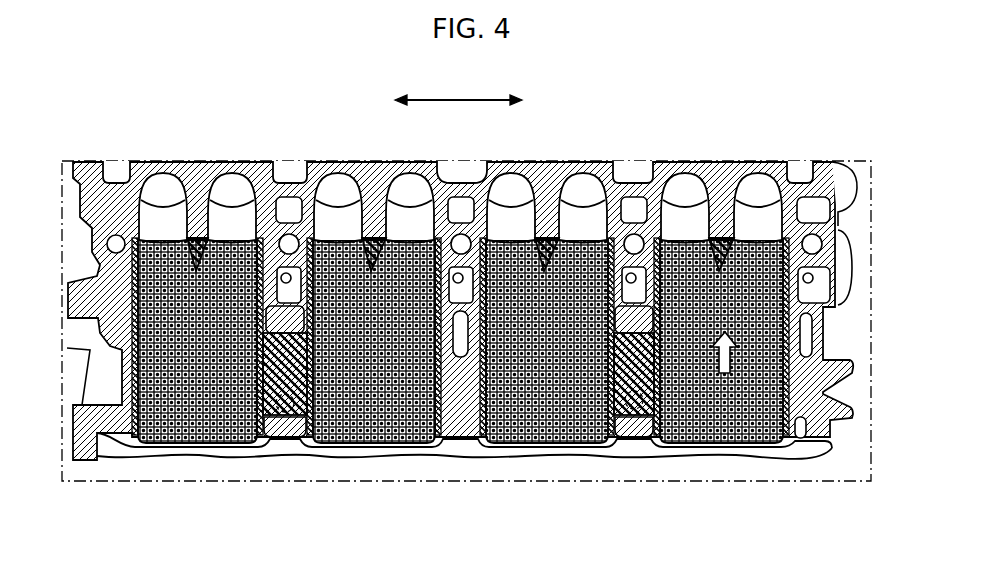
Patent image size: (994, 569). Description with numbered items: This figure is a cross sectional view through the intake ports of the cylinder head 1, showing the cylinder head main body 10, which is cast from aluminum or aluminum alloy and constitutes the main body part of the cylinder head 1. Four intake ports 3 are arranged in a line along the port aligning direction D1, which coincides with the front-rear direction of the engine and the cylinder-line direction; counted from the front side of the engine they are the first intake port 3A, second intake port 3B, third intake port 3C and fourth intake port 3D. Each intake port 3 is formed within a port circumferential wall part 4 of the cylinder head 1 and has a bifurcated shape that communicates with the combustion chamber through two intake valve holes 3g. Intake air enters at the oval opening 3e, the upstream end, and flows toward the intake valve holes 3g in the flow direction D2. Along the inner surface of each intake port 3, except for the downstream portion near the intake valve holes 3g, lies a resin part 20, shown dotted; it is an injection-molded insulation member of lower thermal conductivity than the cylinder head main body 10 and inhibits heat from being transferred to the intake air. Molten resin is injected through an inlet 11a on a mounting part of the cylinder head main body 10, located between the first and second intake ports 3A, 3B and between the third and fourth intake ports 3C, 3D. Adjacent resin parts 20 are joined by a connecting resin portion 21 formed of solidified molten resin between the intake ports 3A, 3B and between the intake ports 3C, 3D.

The cylinder head 1 is at (450, 302).
The cylinder head main body 10 is at (820, 158).
The intake port 3 is at (460, 386).
The first intake port 3A is at (174, 452).
The second intake port 3B is at (388, 452).
The third intake port 3C is at (547, 452).
The fourth intake port 3D is at (697, 452).
The opening of the intake port 3e is at (236, 452).
The intake valve hole 3g is at (156, 200).
The port circumferential wall part 4 is at (457, 442).
The inlet for injecting molten resin 11a is at (292, 438).
The resin part 20 is at (333, 230).
The connecting resin portion 21 is at (316, 400).
The port aligning direction D1 is at (441, 91).
The flow direction D2 is at (733, 363).